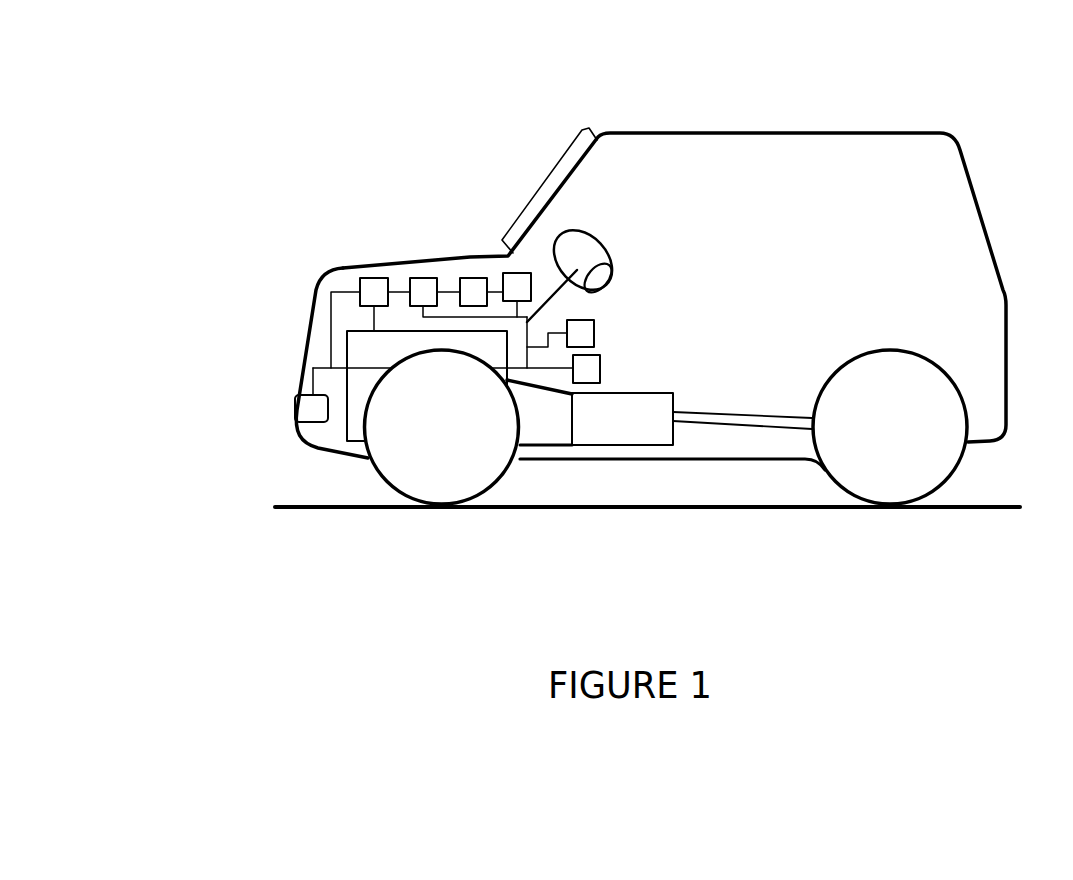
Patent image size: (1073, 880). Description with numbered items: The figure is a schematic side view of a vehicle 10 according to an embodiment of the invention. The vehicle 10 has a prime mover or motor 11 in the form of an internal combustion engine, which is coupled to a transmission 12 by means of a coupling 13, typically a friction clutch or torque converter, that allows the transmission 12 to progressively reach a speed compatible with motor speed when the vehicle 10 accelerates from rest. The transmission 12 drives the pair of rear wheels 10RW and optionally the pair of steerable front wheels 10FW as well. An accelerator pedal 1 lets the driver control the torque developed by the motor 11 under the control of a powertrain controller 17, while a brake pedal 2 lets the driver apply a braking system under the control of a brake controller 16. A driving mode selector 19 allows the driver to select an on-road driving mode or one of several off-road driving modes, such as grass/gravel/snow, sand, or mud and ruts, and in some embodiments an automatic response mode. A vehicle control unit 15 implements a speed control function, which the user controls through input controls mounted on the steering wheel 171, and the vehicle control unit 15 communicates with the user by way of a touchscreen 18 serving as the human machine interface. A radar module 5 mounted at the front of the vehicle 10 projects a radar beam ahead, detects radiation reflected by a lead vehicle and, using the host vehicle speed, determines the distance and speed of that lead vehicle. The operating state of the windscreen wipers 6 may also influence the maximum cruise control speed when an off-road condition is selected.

The accelerator pedal 1 is at (588, 373).
The brake pedal 2 is at (587, 333).
The radar module 5 is at (302, 408).
The windscreen wipers 6 is at (537, 190).
The vehicle 10 is at (513, 202).
The front wheels 10FW is at (413, 475).
The rear wheels 10RW is at (902, 473).
The motor 11 is at (362, 345).
The transmission 12 is at (648, 427).
The coupling 13 is at (548, 427).
The vehicle control unit 15 is at (472, 287).
The brake controller 16 is at (423, 287).
The powertrain controller 17 is at (372, 287).
The touchscreen 18 is at (522, 277).
The driving mode selector 19 is at (527, 330).
The steering wheel 171 is at (597, 234).